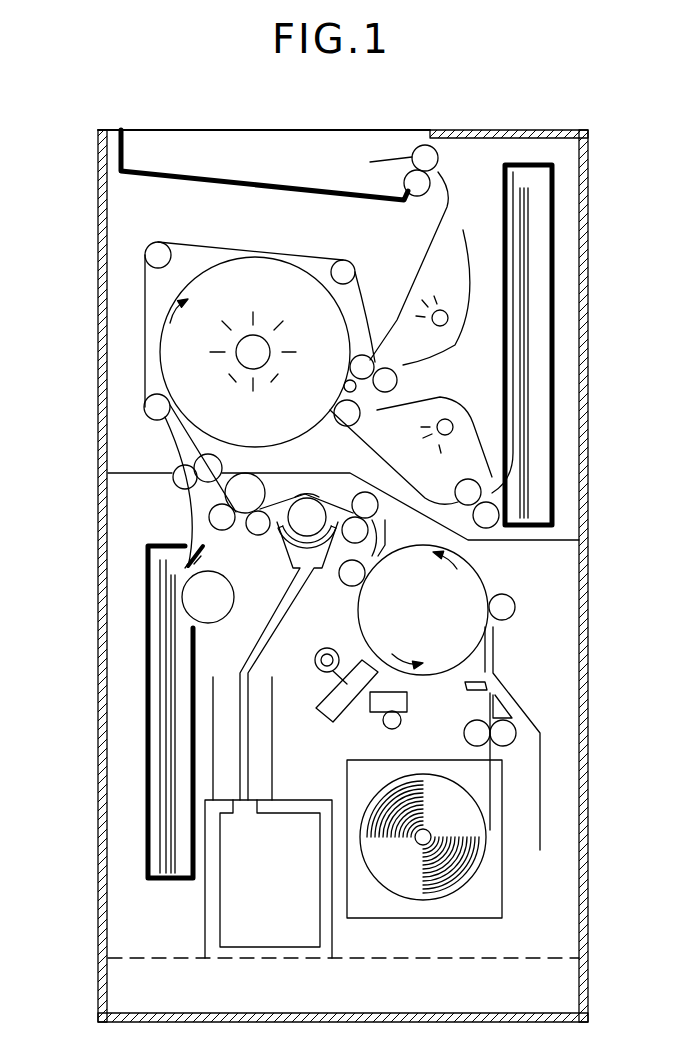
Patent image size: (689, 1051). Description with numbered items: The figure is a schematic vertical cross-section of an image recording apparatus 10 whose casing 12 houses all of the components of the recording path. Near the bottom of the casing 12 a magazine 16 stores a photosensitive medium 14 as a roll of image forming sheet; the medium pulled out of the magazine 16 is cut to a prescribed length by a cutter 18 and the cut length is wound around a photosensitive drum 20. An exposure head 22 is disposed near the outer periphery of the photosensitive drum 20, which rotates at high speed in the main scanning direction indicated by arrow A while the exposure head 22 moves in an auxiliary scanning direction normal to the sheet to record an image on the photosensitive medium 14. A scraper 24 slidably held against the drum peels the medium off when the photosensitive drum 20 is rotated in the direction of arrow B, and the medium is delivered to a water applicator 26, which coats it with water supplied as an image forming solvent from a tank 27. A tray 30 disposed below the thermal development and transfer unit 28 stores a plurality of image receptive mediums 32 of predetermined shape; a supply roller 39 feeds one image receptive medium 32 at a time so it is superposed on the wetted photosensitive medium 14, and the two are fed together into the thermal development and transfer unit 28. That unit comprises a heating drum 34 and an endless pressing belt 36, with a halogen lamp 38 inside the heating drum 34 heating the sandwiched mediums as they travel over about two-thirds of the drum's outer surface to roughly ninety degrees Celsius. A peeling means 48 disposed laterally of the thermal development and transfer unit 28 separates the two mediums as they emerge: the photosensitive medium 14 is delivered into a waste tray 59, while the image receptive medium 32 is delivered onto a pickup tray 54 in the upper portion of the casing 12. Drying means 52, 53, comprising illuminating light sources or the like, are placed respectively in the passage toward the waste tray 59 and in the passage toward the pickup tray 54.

The image recording apparatus 10 is at (507, 107).
The casing 12 is at (587, 318).
The photosensitive medium 14 is at (490, 784).
The magazine 16 is at (502, 909).
The cutter 18 is at (471, 699).
The photosensitive drum 20 is at (490, 590).
The exposure head 22 is at (332, 723).
The scraper 24 is at (386, 552).
The water applicator 26 is at (315, 578).
The tank 27 is at (280, 947).
The thermal development and transfer unit 28 is at (134, 298).
The tray 30 is at (147, 613).
The image receptive mediums 32 is at (160, 778).
The heating drum 34 is at (322, 422).
The endless pressing belt 36 is at (263, 252).
The halogen lamp 38 is at (262, 332).
The supply roller 39 is at (240, 568).
The peeling means 48 is at (345, 390).
The drying means 52 is at (453, 400).
The drying means 53 is at (470, 346).
The pickup tray 54 is at (305, 190).
The waste tray 59 is at (562, 369).